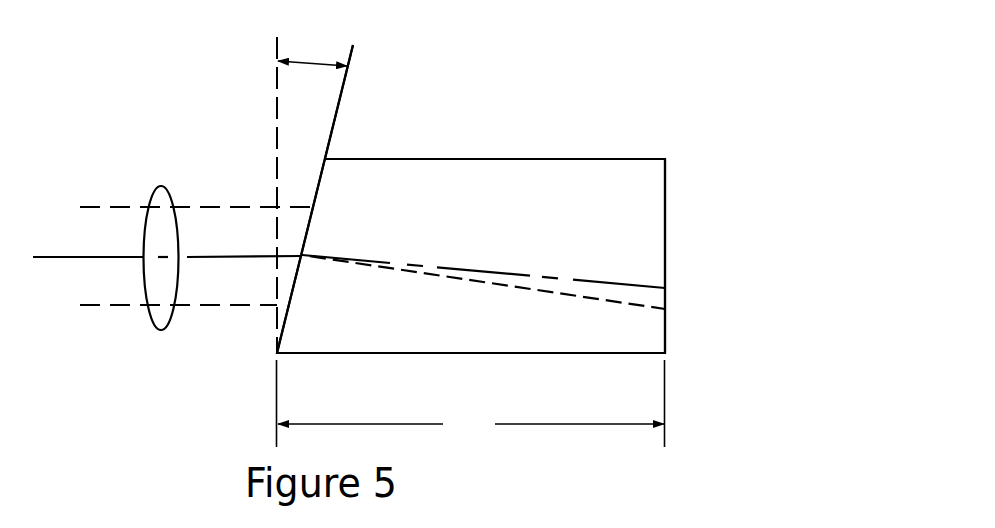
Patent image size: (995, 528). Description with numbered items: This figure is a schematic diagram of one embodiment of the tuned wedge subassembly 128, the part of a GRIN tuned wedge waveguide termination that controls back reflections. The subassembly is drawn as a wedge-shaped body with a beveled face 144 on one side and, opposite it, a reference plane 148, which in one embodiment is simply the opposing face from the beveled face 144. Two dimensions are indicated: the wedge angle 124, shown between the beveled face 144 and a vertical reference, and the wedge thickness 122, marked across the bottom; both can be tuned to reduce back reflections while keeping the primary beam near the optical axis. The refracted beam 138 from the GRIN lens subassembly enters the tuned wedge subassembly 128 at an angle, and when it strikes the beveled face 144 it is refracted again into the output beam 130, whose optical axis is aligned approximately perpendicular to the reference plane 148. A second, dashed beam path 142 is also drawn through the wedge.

The wedge thickness 122 is at (471, 403).
The wedge angle 124 is at (282, 195).
The tuned wedge subassembly 128 is at (686, 98).
The output beam 130 is at (161, 187).
The refracted beam 138 is at (488, 267).
The second refracted beam path 142 is at (605, 300).
The beveled face 144 is at (320, 188).
The reference plane 148 is at (665, 253).